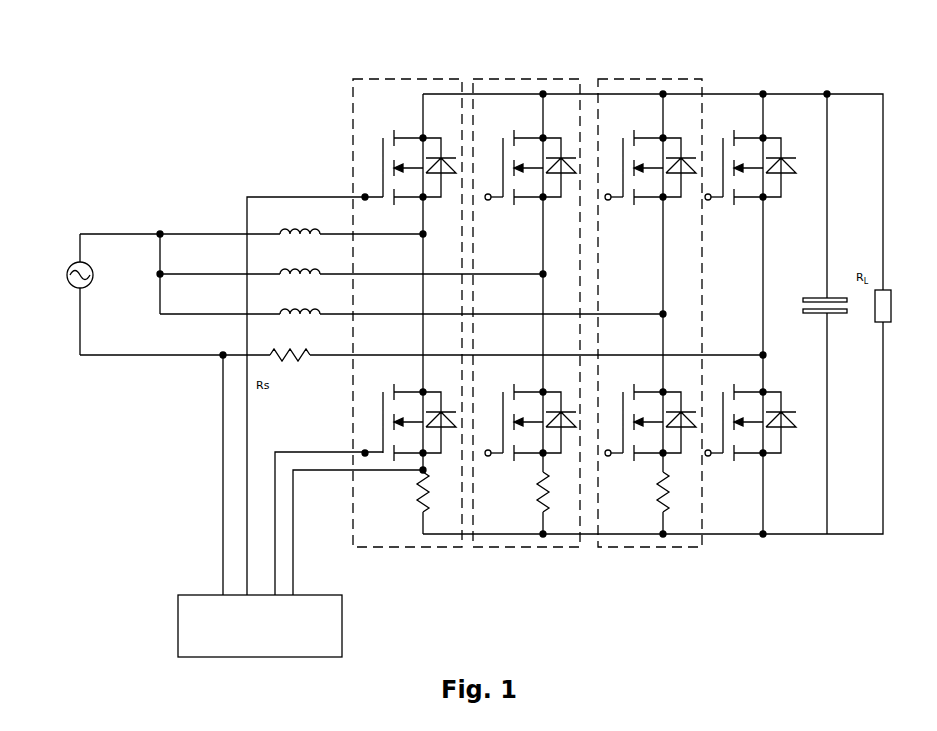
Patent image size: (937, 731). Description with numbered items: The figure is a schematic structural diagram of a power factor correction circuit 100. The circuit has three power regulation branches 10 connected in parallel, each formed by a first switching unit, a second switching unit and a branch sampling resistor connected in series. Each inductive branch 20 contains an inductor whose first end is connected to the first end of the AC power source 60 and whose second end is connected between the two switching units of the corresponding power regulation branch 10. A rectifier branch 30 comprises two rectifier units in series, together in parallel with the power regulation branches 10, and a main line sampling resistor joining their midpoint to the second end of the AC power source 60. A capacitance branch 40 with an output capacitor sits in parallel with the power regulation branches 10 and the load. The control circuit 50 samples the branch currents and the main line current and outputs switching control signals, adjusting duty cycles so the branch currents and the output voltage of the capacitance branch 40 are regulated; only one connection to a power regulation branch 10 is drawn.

The power factor correction circuit 100 is at (498, 19).
The power regulation branch 10 is at (375, 78).
The inductive branch 20 is at (233, 233).
The rectifier branch 30 is at (765, 126).
The capacitance branch 40 is at (829, 126).
The control circuit 50 is at (197, 600).
The AC power source 60 is at (77, 288).